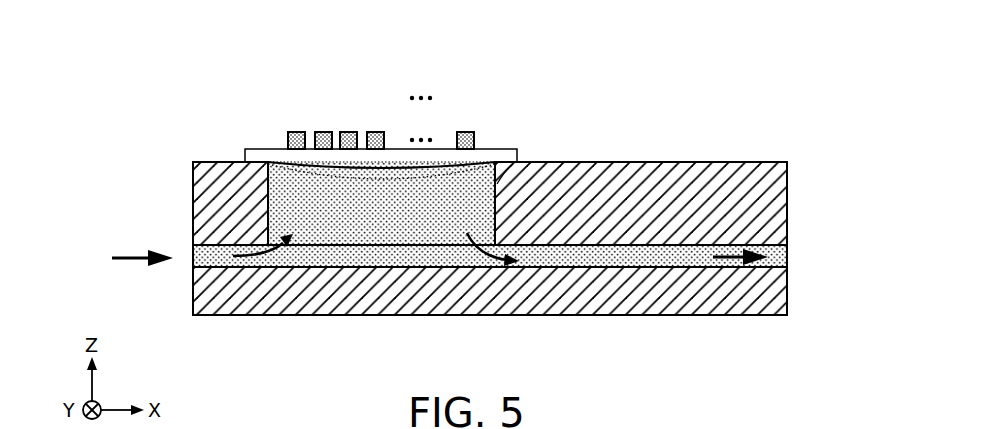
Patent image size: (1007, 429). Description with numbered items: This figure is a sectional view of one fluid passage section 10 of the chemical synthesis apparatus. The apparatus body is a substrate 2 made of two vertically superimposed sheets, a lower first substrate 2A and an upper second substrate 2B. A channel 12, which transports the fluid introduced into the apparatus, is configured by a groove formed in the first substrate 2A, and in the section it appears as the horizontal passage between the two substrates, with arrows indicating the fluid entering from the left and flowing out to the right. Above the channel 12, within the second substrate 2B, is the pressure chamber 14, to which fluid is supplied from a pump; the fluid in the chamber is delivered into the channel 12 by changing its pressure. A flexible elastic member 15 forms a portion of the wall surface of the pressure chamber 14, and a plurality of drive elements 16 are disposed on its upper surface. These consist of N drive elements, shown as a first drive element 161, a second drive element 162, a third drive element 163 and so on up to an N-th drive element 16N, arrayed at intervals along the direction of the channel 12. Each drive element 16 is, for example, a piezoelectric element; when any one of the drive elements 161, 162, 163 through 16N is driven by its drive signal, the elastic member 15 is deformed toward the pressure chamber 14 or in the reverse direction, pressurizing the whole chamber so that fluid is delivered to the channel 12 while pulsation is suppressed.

The fluid passage section 10 is at (745, 108).
The substrate 2 is at (529, 238).
The first substrate 2A is at (514, 291).
The second substrate 2B is at (787, 210).
The channel 12 is at (624, 268).
The pressure chamber 14 is at (517, 163).
The elastic member 15 is at (513, 150).
The drive element 16 is at (487, 87).
The first drive element 161 is at (296, 132).
The second drive element 162 is at (323, 132).
The third drive element 163 is at (349, 132).
The N-th drive element 16N is at (465, 132).